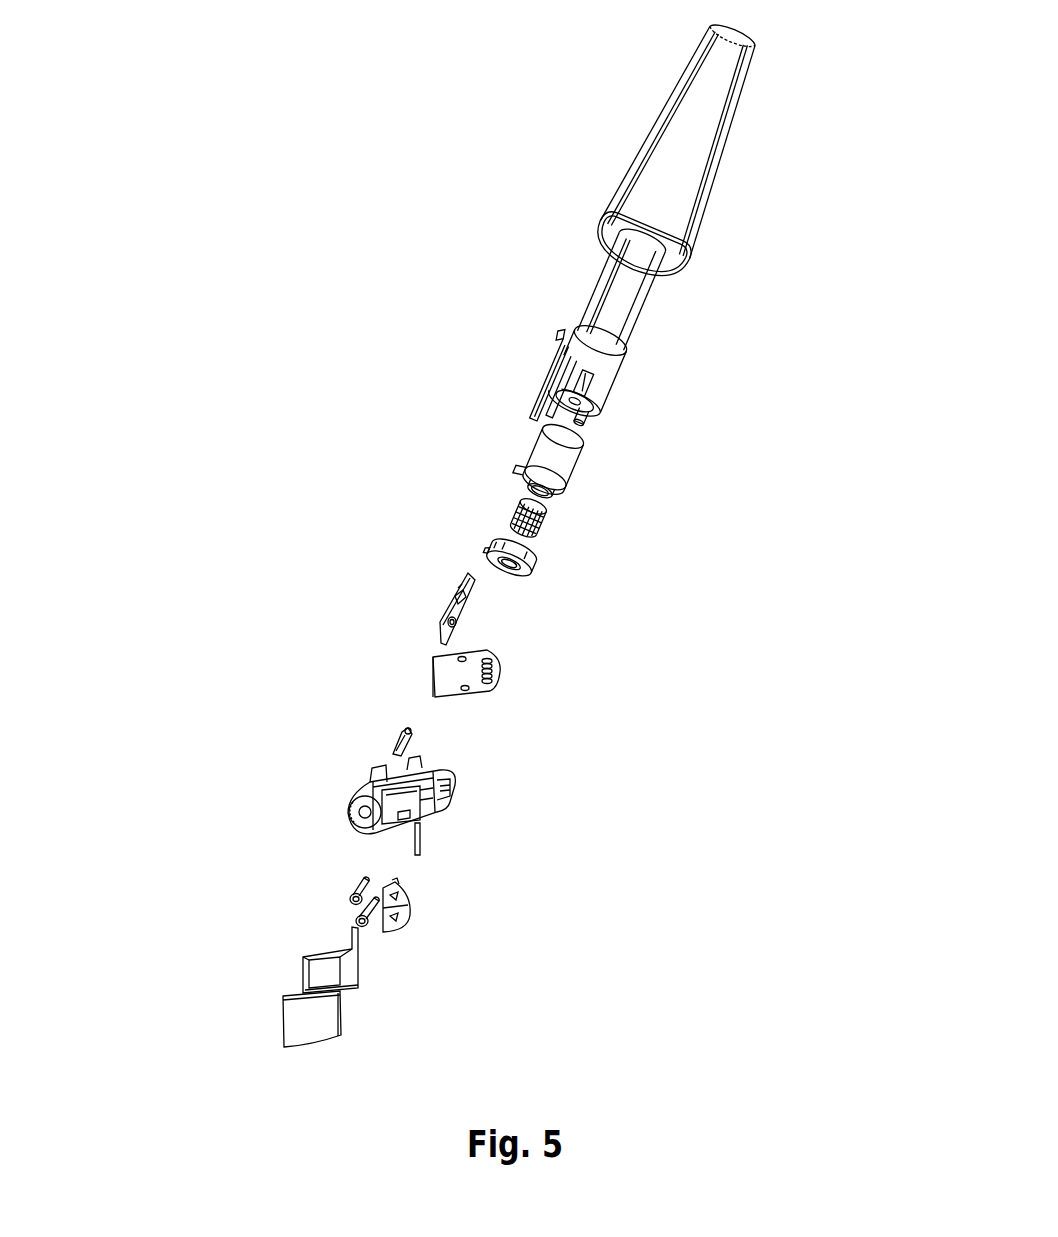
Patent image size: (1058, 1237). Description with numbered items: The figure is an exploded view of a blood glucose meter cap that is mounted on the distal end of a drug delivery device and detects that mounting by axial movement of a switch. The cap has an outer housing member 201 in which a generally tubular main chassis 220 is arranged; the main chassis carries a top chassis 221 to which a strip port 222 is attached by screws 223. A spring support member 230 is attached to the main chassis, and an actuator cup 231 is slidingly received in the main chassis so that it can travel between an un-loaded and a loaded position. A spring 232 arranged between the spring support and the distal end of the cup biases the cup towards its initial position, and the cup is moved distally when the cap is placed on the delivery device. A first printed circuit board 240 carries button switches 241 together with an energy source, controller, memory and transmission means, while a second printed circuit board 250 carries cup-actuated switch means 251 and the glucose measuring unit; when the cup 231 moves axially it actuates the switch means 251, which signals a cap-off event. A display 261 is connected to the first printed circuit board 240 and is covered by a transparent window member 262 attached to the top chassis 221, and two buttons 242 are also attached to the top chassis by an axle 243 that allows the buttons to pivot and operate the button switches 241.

The housing member 201 is at (672, 172).
The main chassis 220 is at (612, 310).
The top chassis 221 is at (397, 777).
The strip port 222 is at (358, 810).
The screws 223 is at (353, 896).
The spring support member 230 is at (487, 553).
The actuator cup 231 is at (542, 460).
The spring 232 is at (515, 508).
The first printed circuit board 240 is at (448, 677).
The button switches 241 is at (492, 677).
The buttons 242 is at (390, 907).
The axle 243 is at (418, 857).
The second printed circuit board 250 is at (463, 610).
The switch means 251 is at (455, 621).
The display 261 is at (325, 975).
The window member 262 is at (303, 1010).